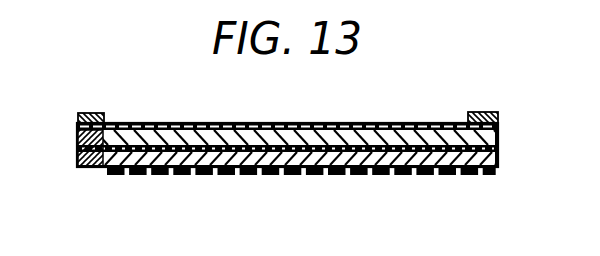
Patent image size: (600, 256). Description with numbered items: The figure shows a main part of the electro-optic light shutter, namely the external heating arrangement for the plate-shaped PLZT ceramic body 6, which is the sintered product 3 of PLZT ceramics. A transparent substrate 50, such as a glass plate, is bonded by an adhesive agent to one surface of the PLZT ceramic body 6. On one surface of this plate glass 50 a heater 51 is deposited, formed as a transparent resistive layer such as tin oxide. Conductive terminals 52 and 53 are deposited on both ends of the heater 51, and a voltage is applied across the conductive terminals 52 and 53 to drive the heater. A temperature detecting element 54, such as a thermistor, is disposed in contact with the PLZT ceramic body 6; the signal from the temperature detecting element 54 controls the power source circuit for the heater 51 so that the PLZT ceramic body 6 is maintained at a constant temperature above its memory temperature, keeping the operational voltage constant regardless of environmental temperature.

The sintered product 3 is at (310, 167).
The PLZT ceramic body 6 is at (492, 170).
The transparent substrate 50 is at (393, 134).
The heater 51 is at (285, 126).
The conductive terminal 52 is at (93, 114).
The conductive terminal 53 is at (482, 111).
The temperature detecting element 54 is at (88, 168).